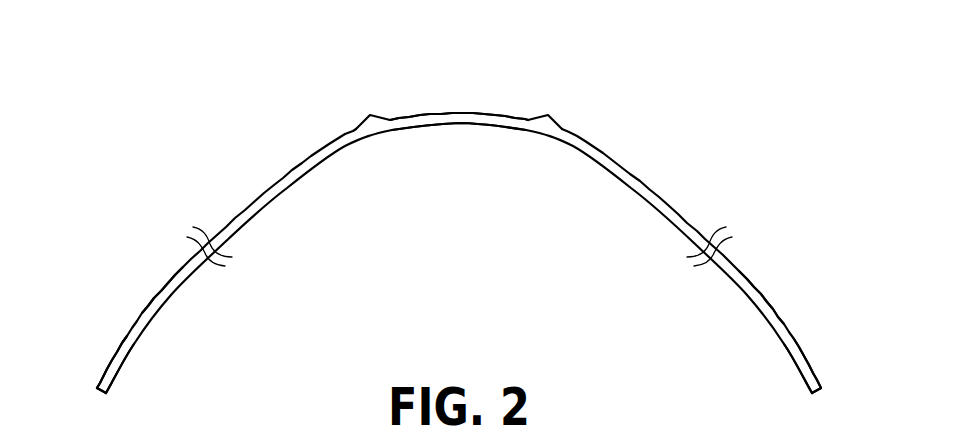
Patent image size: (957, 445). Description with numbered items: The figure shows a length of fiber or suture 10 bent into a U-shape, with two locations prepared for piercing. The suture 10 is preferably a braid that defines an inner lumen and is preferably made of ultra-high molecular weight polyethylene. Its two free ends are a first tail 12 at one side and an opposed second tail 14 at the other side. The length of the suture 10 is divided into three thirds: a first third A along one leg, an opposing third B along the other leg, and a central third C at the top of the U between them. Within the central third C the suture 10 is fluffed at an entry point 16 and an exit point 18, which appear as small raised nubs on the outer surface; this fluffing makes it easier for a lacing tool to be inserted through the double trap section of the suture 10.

The suture 10 is at (620, 120).
The first tail 12 is at (797, 342).
The second tail 14 is at (126, 338).
The entry point 16 is at (548, 115).
The exit point 18 is at (370, 115).
The first third A is at (765, 299).
The opposing third B is at (163, 289).
The central third C is at (459, 113).